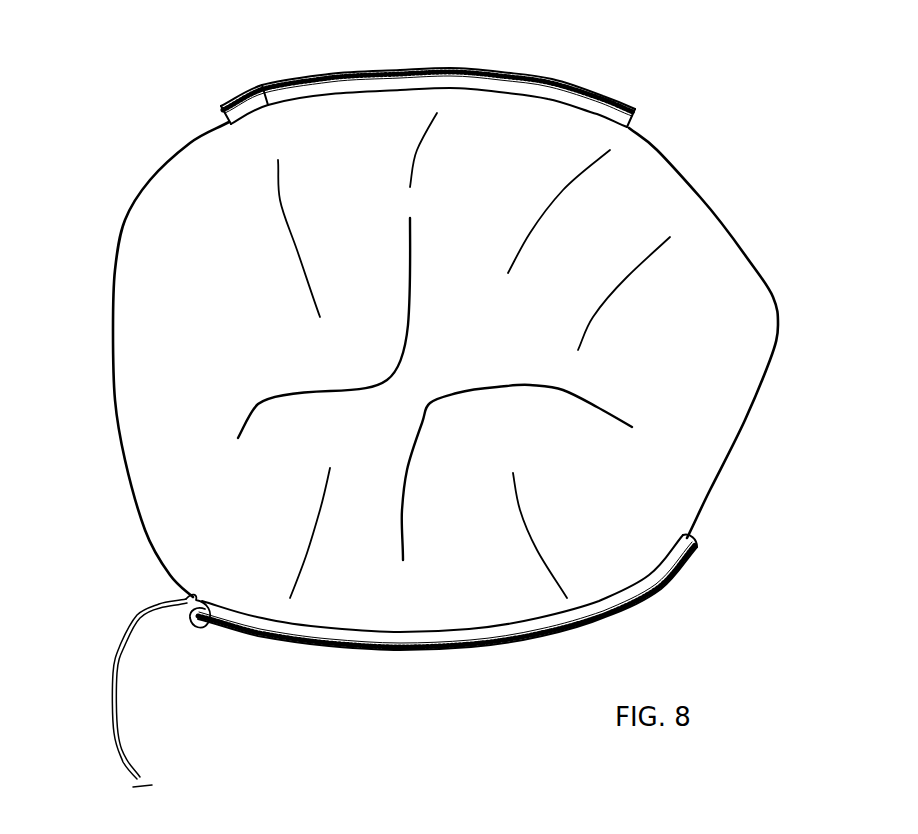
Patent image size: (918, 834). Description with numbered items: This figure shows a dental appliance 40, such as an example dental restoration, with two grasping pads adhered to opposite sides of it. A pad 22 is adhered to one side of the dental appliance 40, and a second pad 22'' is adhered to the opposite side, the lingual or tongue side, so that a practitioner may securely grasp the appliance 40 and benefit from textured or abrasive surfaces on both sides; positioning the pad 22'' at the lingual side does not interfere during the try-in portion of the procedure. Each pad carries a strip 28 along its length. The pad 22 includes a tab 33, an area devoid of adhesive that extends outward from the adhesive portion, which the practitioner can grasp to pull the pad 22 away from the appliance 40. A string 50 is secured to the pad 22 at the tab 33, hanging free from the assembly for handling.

The pad 22 is at (447, 607).
The pad 22'' is at (460, 78).
The hook and loop fastener strip 28 is at (345, 76).
The tab 33 is at (240, 94).
The dental appliance 40 is at (776, 289).
The string 50 is at (130, 636).